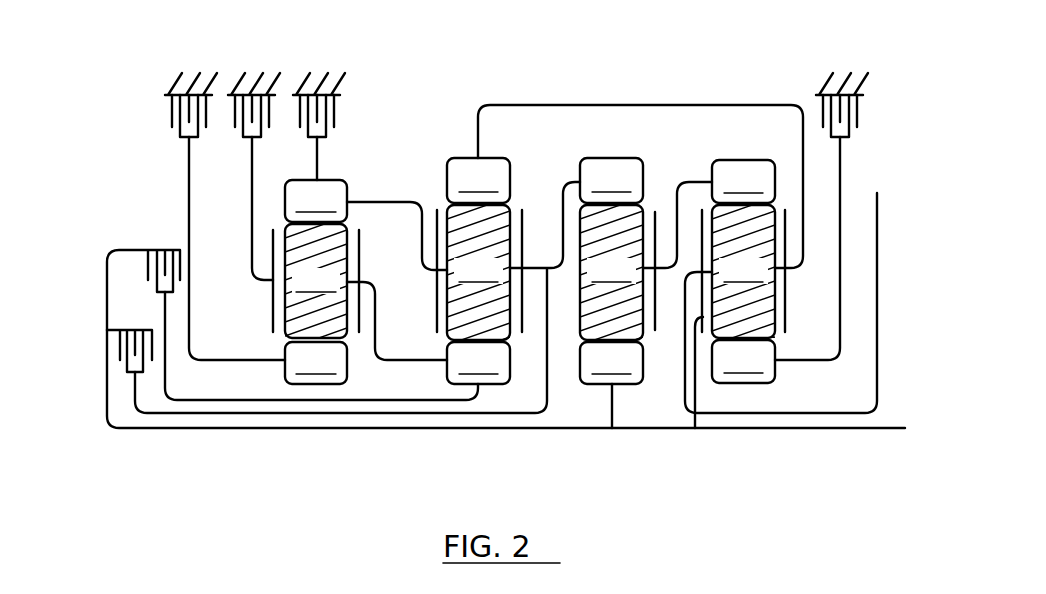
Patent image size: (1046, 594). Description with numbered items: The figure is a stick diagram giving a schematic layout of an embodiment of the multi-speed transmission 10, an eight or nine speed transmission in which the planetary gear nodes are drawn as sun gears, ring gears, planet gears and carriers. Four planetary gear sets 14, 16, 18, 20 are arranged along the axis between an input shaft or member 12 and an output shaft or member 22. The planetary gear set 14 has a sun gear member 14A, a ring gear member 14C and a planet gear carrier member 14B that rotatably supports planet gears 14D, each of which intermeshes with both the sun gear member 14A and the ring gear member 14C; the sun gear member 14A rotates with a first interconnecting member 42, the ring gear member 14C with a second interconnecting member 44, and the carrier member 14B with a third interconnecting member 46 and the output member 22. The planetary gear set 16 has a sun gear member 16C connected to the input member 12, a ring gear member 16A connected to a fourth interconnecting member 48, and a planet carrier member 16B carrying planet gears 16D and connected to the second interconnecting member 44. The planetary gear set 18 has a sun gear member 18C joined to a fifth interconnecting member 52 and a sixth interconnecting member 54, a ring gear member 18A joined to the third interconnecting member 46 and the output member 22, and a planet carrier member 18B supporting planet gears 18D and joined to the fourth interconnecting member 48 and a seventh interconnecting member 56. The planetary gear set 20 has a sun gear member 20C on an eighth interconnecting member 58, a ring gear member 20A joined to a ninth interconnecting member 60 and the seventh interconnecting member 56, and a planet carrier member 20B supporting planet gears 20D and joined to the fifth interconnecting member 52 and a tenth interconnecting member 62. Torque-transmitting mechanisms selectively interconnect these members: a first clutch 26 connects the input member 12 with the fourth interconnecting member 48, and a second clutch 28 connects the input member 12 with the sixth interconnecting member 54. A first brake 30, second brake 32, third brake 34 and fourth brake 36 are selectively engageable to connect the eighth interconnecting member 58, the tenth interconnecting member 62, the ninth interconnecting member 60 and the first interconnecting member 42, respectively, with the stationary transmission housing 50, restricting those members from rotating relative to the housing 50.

The multi-speed transmission 10 is at (736, 64).
The input shaft or member 12 is at (880, 430).
The planetary gear set 14 is at (753, 317).
The sun gear member 14A is at (743, 361).
The planet gear carrier member 14B is at (786, 310).
The ring gear member 14C is at (743, 181).
The planet gears 14D is at (743, 278).
The planetary gear set 16 is at (631, 308).
The ring gear member 16A is at (611, 180).
The planet gear carrier member 16B is at (657, 217).
The sun gear member 16C is at (611, 385).
The planet gears 16D is at (611, 278).
The planetary gear set 18 is at (474, 312).
The ring gear member 18A is at (478, 180).
The planet gear carrier member 18B is at (435, 300).
The sun gear member 18C is at (478, 363).
The planet gears 18D is at (478, 278).
The planetary gear set 20 is at (304, 327).
The ring gear member 20A is at (316, 201).
The planet gear carrier member 20B is at (273, 310).
The sun gear member 20C is at (316, 363).
The planet gears 20D is at (316, 290).
The output shaft or member 22 is at (878, 225).
The first clutch 26 is at (115, 347).
The second clutch 28 is at (148, 265).
The first brake 30 is at (172, 117).
The second brake 32 is at (237, 117).
The third brake 34 is at (334, 117).
The fourth brake 36 is at (858, 117).
The first shaft or interconnecting member 42 is at (840, 265).
The second shaft or interconnecting member 44 is at (658, 272).
The third shaft or interconnecting member 46 is at (620, 105).
The fourth shaft or interconnecting member 48 is at (577, 178).
The transmission housing 50 is at (236, 80).
The fifth shaft or interconnecting member 52 is at (417, 362).
The sixth shaft or interconnecting member 54 is at (380, 402).
The seventh shaft or interconnecting member 56 is at (376, 202).
The eighth shaft or interconnecting member 58 is at (223, 362).
The ninth shaft or interconnecting member 60 is at (316, 155).
The tenth shaft or interconnecting member 62 is at (252, 240).